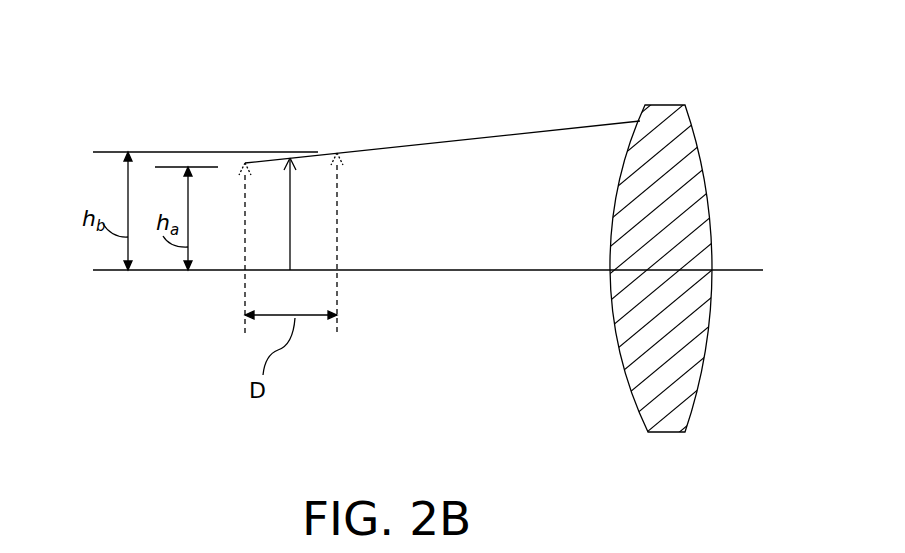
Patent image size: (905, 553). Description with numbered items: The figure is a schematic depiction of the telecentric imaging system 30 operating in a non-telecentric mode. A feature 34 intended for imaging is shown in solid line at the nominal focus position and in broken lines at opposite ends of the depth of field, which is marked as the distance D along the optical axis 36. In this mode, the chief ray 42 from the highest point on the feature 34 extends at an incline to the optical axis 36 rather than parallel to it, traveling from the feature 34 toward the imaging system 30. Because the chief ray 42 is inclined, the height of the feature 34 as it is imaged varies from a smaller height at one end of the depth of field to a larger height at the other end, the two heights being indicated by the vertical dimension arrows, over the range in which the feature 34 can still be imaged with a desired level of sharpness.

The telecentric imaging system 30 is at (663, 104).
The feature 34 is at (290, 212).
The optical axis 36 is at (745, 273).
The chief ray 42 is at (445, 138).